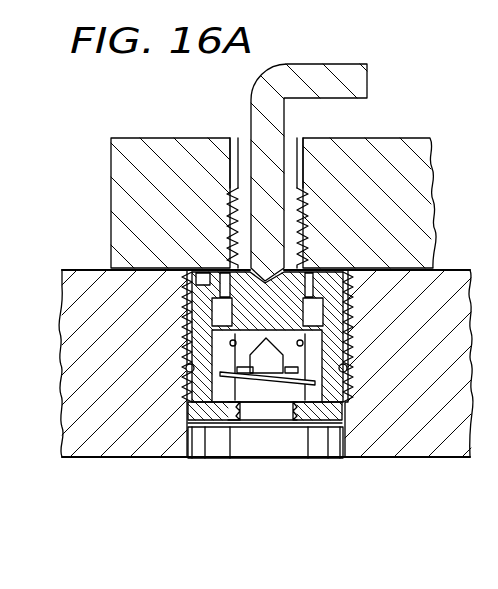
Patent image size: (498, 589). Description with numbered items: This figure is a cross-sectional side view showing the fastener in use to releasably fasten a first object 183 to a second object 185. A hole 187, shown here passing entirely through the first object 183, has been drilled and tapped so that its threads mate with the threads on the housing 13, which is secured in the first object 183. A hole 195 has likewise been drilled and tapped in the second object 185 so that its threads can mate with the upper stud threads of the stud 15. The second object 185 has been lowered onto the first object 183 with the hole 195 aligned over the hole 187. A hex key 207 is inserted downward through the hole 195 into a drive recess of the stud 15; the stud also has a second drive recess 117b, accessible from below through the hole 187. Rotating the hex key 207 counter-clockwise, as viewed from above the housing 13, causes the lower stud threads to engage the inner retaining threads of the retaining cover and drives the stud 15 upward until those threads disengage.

The housing 13 is at (222, 428).
The stud 15 is at (293, 212).
The drive recess 117b is at (265, 385).
The first object 183 is at (146, 370).
The second object 185 is at (188, 215).
The hole 187 is at (337, 460).
The hole 195 is at (233, 138).
The hex key 207 is at (345, 63).